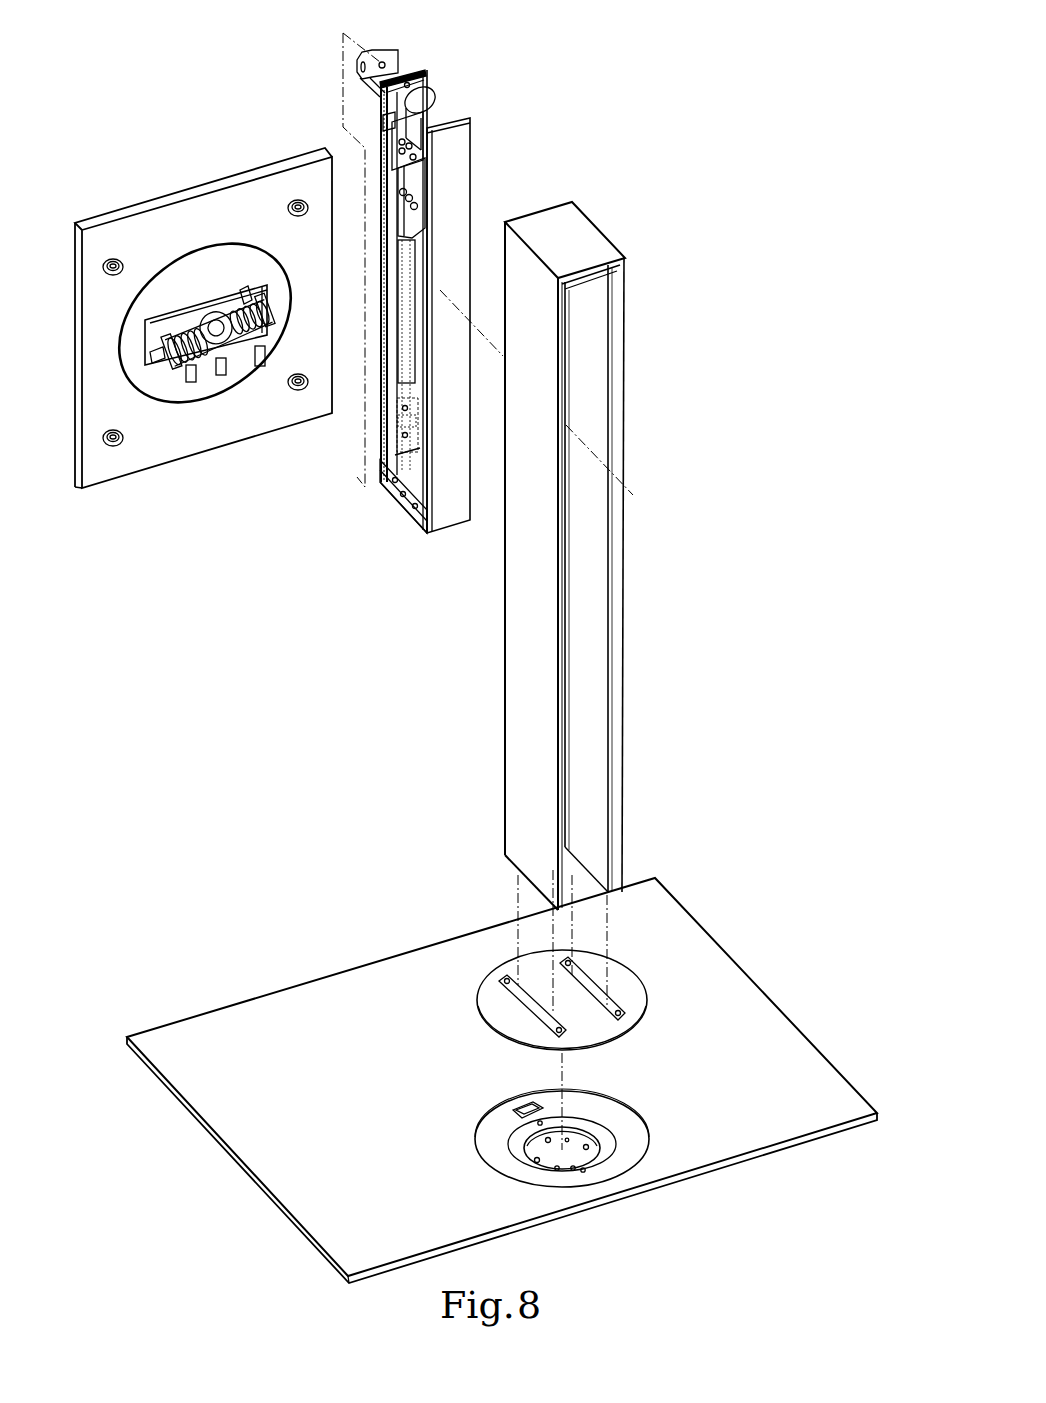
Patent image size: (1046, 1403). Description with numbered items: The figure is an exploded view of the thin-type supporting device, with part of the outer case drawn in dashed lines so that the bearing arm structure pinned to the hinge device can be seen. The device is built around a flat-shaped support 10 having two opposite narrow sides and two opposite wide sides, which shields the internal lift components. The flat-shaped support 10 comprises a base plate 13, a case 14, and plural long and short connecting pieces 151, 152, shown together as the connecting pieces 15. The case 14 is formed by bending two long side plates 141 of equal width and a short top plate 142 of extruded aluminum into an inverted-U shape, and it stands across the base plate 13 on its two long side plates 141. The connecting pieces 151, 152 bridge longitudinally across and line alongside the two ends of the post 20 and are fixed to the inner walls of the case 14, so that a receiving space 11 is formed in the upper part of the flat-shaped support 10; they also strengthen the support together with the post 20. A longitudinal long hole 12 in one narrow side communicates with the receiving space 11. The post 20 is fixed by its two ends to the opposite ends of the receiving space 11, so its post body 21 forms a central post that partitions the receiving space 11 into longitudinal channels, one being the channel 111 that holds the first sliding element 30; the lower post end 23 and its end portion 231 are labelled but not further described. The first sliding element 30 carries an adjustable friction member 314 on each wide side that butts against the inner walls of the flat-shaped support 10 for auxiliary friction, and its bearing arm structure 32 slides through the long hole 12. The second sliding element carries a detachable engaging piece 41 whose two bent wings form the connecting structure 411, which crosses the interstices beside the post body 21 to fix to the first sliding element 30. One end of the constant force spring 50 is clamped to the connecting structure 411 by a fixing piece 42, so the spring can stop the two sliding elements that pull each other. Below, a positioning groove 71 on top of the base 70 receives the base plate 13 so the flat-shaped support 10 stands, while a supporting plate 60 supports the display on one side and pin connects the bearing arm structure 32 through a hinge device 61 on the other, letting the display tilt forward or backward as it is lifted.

The flat-shaped support 10 is at (669, 553).
The receiving space 11 is at (441, 283).
The longitudinal channel 111 is at (405, 421).
The longitudinal long hole 12 is at (412, 72).
The base plate 13 is at (632, 988).
The case 14 is at (629, 556).
The long side plate 141 is at (567, 360).
The short top plate 142 is at (585, 276).
The cover assembly 15 is at (568, 78).
The long connecting piece 151 is at (432, 103).
The short connecting piece 152 is at (413, 150).
The post 20 is at (273, 574).
The post body 21 is at (380, 458).
The bottom bracket 23 is at (369, 528).
The bottom plate 231 is at (383, 483).
The first sliding element 30 is at (250, 87).
The bearing arm structure 32 is at (360, 81).
The adjustable friction member 314 is at (383, 122).
The engaging piece 41 is at (499, 198).
The connecting structure 411 is at (424, 236).
The fixing piece 42 is at (418, 190).
The constant force spring 50 is at (468, 83).
The supporting plate 60 is at (172, 156).
The hinge device 61 is at (192, 367).
The base 70 is at (276, 944).
The positioning groove 71 is at (602, 1182).